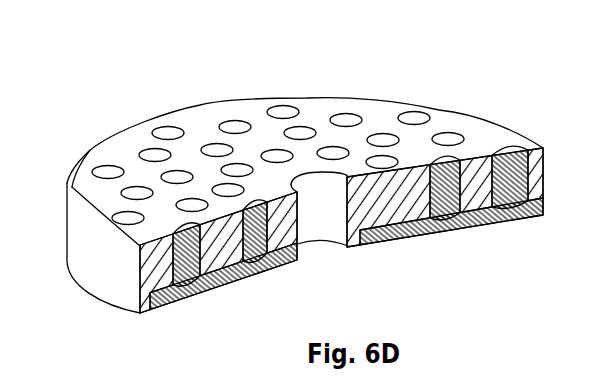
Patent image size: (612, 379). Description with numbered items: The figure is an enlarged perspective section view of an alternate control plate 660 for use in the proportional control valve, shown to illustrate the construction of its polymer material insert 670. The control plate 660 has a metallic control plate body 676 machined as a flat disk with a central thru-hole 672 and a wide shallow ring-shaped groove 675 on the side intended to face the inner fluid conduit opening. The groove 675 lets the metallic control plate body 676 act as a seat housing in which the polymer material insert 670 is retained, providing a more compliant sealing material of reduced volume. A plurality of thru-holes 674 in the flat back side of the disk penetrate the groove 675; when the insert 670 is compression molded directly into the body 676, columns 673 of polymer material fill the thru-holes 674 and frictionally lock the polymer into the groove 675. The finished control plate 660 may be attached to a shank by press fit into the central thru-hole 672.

The control plate 660 is at (131, 66).
The polymer material insert 670 is at (227, 284).
The central thru-hole 672 is at (346, 205).
The columns 673 is at (443, 160).
The thru-holes 674 is at (240, 205).
The wide shallow ring-shaped groove 675 is at (408, 238).
The metallic control plate body 676 is at (152, 272).